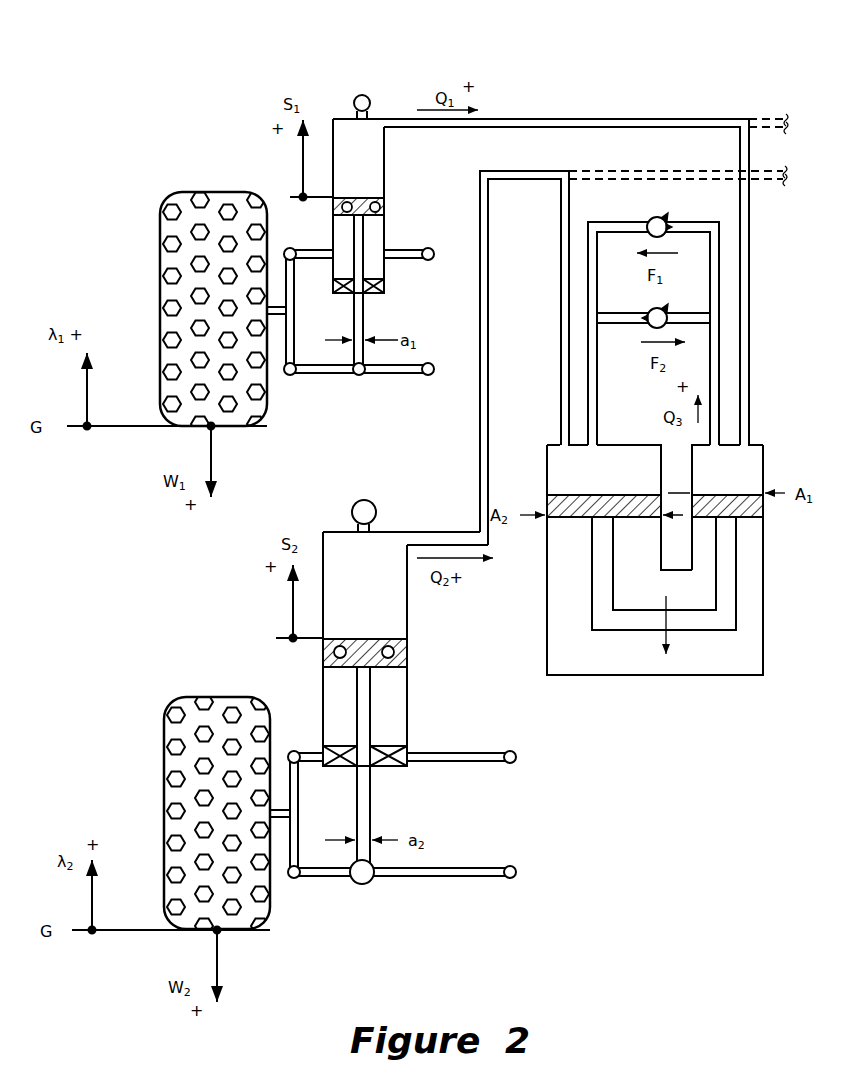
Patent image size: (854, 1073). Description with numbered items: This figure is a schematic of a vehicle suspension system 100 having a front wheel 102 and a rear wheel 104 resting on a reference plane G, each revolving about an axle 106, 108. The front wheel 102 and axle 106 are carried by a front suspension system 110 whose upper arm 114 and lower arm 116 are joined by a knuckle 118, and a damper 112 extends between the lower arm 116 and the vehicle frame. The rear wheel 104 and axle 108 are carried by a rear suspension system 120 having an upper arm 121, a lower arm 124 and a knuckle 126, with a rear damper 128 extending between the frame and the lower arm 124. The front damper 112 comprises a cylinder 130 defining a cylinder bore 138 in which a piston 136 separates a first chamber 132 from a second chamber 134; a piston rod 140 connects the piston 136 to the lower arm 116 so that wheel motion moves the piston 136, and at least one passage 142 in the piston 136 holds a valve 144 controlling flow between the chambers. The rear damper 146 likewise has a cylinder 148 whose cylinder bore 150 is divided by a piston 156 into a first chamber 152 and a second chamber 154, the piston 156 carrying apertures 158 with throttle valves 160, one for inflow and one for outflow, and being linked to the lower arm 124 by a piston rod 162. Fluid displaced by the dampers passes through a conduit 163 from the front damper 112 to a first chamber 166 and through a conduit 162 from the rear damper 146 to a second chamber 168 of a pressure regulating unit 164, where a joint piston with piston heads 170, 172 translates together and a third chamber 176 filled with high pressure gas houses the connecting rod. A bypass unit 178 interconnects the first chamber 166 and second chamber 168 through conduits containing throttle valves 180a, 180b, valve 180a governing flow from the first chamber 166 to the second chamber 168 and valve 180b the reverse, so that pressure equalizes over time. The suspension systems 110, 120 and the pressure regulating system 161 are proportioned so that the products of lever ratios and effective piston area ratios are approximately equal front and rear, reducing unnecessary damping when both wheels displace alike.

The suspension system 100 is at (72, 557).
The front wheel 102 is at (163, 215).
The rear wheel 104 is at (166, 772).
The axle 106 is at (277, 317).
The axle 108 is at (282, 855).
The front suspension system 110 is at (237, 125).
The damper 112 is at (331, 85).
The upper arm 114 is at (415, 257).
The lower arm 116 is at (388, 375).
The knuckle 118 is at (292, 272).
The rear suspension system 120 is at (235, 648).
The second upper lever arm 121 is at (458, 765).
The lower arm 124 is at (465, 878).
The knuckle 126 is at (300, 774).
The rear damper 128 is at (320, 522).
The cylinder 130 is at (387, 147).
The first chamber 132 is at (368, 130).
The second chamber 134 is at (384, 230).
The piston 136 is at (330, 222).
The cylinder bore 138 is at (385, 175).
The piston rod 140 is at (364, 262).
The passage 142 is at (347, 197).
The valve 144 is at (352, 200).
The rear damper 146 is at (270, 602).
The cylinder 148 is at (410, 612).
The cylinder bore 150 is at (408, 705).
The first chamber 152 is at (388, 547).
The second chamber 154 is at (323, 690).
The piston 156 is at (323, 657).
The apertures 158 is at (328, 638).
The throttle valves 160 is at (393, 655).
The piston rod 162 is at (478, 460).
The conduit 163 is at (645, 118).
The pressure regulating unit 164 is at (674, 680).
The first chamber 166 is at (760, 466).
The second chamber 168 is at (545, 460).
The piston head 170 is at (758, 508).
The piston head 172 is at (575, 518).
The third chamber 176 is at (600, 665).
The bypass unit 178 is at (724, 348).
The throttle valve 180a is at (665, 234).
The throttle valve 180b is at (650, 326).
The pressure regulating system 161 is at (768, 710).